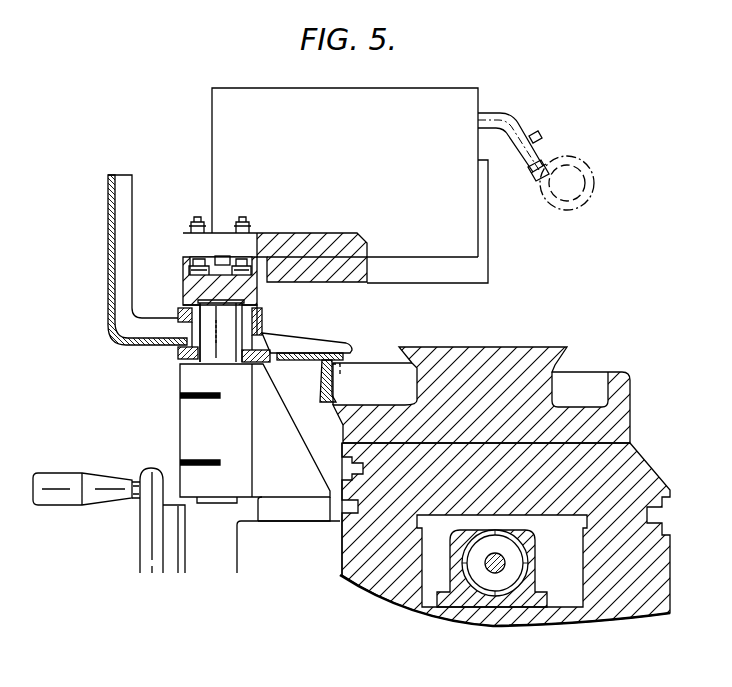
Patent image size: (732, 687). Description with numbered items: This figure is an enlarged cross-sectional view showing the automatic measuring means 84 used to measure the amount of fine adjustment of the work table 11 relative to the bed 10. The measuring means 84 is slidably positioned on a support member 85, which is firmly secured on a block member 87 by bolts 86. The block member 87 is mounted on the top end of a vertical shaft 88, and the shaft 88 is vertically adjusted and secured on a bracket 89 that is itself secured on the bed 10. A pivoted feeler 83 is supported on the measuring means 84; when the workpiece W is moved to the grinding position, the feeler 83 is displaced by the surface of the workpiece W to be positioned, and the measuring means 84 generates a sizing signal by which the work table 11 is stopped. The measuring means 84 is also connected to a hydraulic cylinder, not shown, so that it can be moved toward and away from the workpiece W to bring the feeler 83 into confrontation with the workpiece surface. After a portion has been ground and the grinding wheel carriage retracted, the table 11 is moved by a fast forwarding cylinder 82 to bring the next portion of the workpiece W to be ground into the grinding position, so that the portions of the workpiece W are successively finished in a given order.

The bed 10 is at (477, 555).
The work table 11 is at (622, 484).
The fast forwarding cylinder 82 is at (495, 590).
The pivoted feeler 83 is at (518, 126).
The automatic measuring means 84 is at (447, 82).
The support member 85 is at (296, 266).
The bolts 86 is at (184, 273).
The block member 87 is at (193, 288).
The vertical shaft 88 is at (210, 332).
The bracket 89 is at (270, 449).
The workpiece W is at (551, 212).